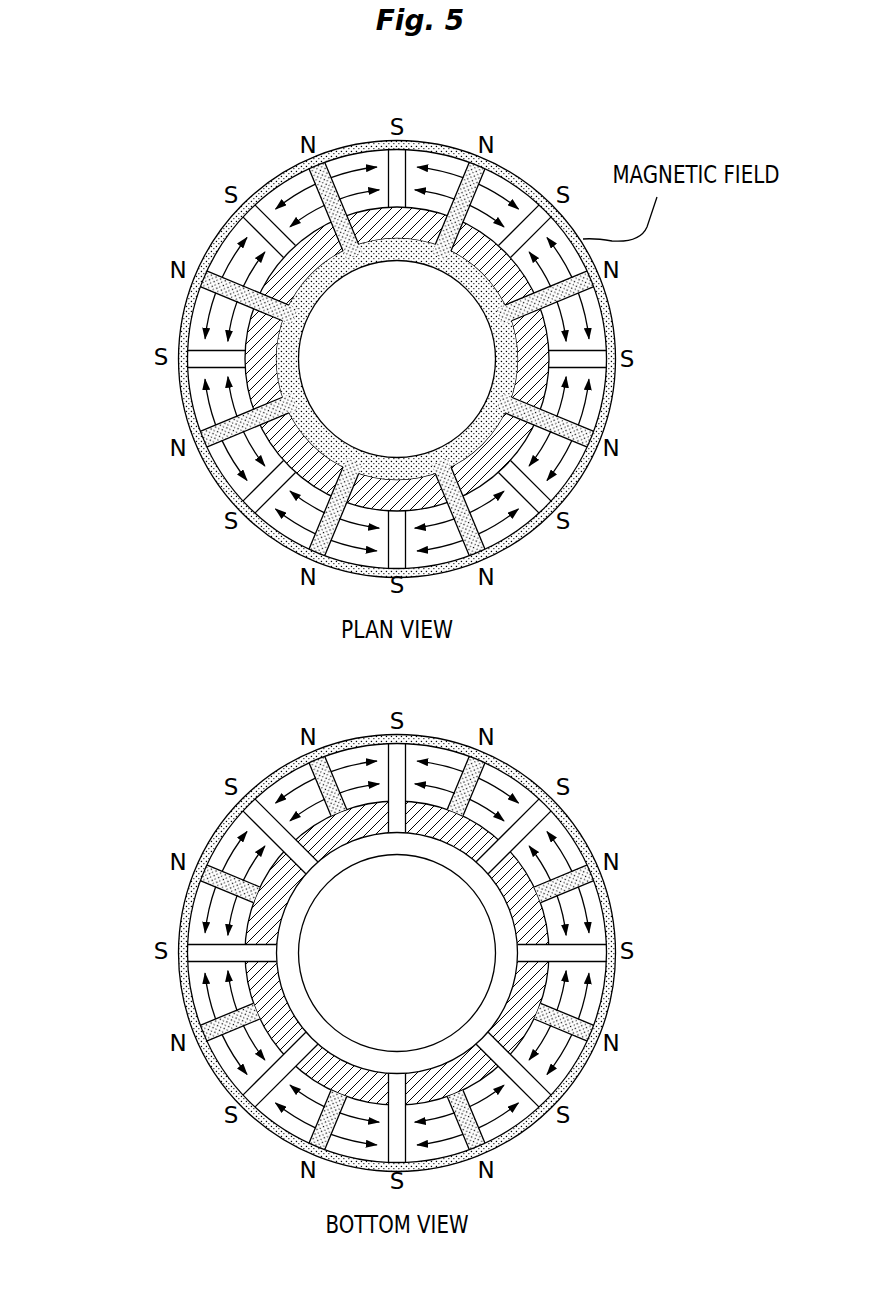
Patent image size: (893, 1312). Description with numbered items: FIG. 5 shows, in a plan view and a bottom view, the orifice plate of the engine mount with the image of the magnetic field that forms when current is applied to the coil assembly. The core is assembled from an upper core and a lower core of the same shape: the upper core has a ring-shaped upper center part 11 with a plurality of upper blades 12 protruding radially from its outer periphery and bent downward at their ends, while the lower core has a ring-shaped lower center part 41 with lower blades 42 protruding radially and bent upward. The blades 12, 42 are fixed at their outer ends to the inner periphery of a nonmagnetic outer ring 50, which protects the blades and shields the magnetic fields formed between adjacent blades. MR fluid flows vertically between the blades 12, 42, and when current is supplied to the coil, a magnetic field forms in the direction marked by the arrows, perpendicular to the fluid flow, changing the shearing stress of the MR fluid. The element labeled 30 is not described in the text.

The upper center part 11 is at (300, 293).
The upper blades 12 is at (318, 197).
The back yoke ring 30 is at (258, 383).
The lower center part 41 is at (296, 896).
The lower blades 42 is at (398, 168).
The outer ring 50 is at (611, 303).